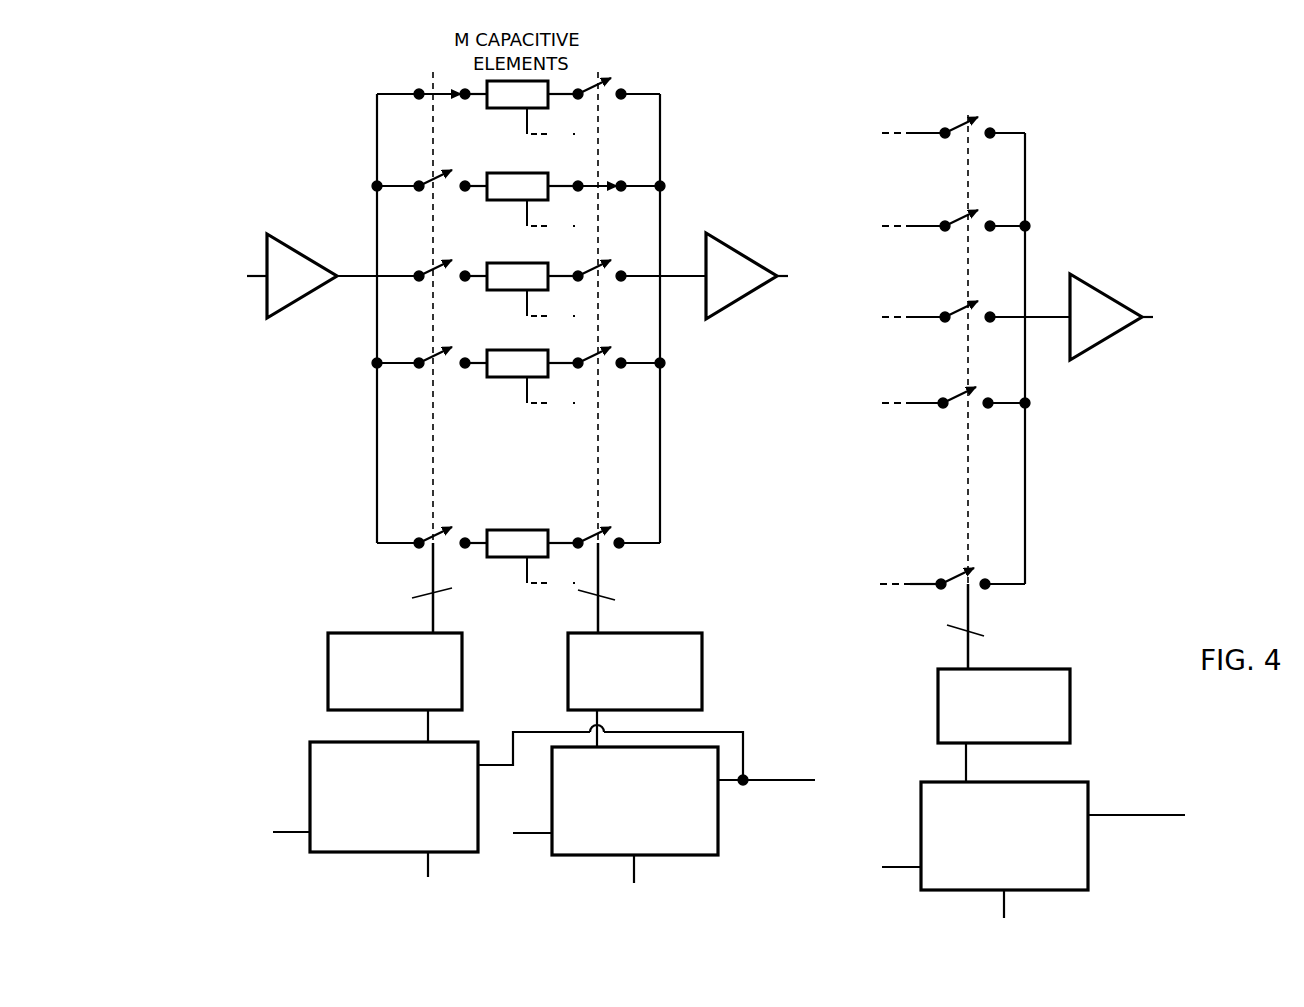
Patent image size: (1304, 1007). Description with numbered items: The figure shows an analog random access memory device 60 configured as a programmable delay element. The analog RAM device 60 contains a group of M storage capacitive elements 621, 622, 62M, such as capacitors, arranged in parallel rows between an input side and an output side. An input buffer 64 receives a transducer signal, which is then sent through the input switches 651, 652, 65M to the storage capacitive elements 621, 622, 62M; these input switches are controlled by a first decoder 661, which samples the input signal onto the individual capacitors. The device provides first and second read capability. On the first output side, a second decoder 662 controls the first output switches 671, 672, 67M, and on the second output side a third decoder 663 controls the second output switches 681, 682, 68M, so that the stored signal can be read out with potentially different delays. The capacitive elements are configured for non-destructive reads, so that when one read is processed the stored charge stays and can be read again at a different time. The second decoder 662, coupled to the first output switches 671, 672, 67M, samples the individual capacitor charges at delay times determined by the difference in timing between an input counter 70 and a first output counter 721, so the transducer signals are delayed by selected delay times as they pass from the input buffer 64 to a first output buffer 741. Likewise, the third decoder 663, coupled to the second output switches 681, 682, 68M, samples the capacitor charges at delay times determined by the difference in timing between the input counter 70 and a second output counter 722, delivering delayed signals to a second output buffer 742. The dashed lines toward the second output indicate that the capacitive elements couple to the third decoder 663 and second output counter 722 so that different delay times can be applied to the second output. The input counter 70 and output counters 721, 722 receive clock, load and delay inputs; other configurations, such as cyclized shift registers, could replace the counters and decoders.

The analog random access memory device 60 is at (695, 119).
The storage capacitive element 621 is at (499, 110).
The storage capacitive element 622 is at (499, 200).
The storage capacitive element 62M is at (496, 560).
The input buffer 64 is at (263, 304).
The input switch 651 is at (419, 90).
The input switch 652 is at (419, 184).
The input switch 65M is at (419, 541).
The decoder 661 is at (362, 632).
The decoder 662 is at (661, 632).
The decoder 663 is at (1030, 668).
The first output switch 671 is at (621, 92).
The first output switch 672 is at (621, 184).
The first output switch 67M is at (619, 541).
The second output switch 681 is at (991, 131).
The second output switch 682 is at (990, 224).
The second output switch 68M is at (998, 567).
The input counter 70 is at (310, 757).
The first output counter 721 is at (690, 858).
The second output counter 722 is at (1060, 893).
The first output buffer 741 is at (740, 251).
The second output buffer 742 is at (1105, 291).